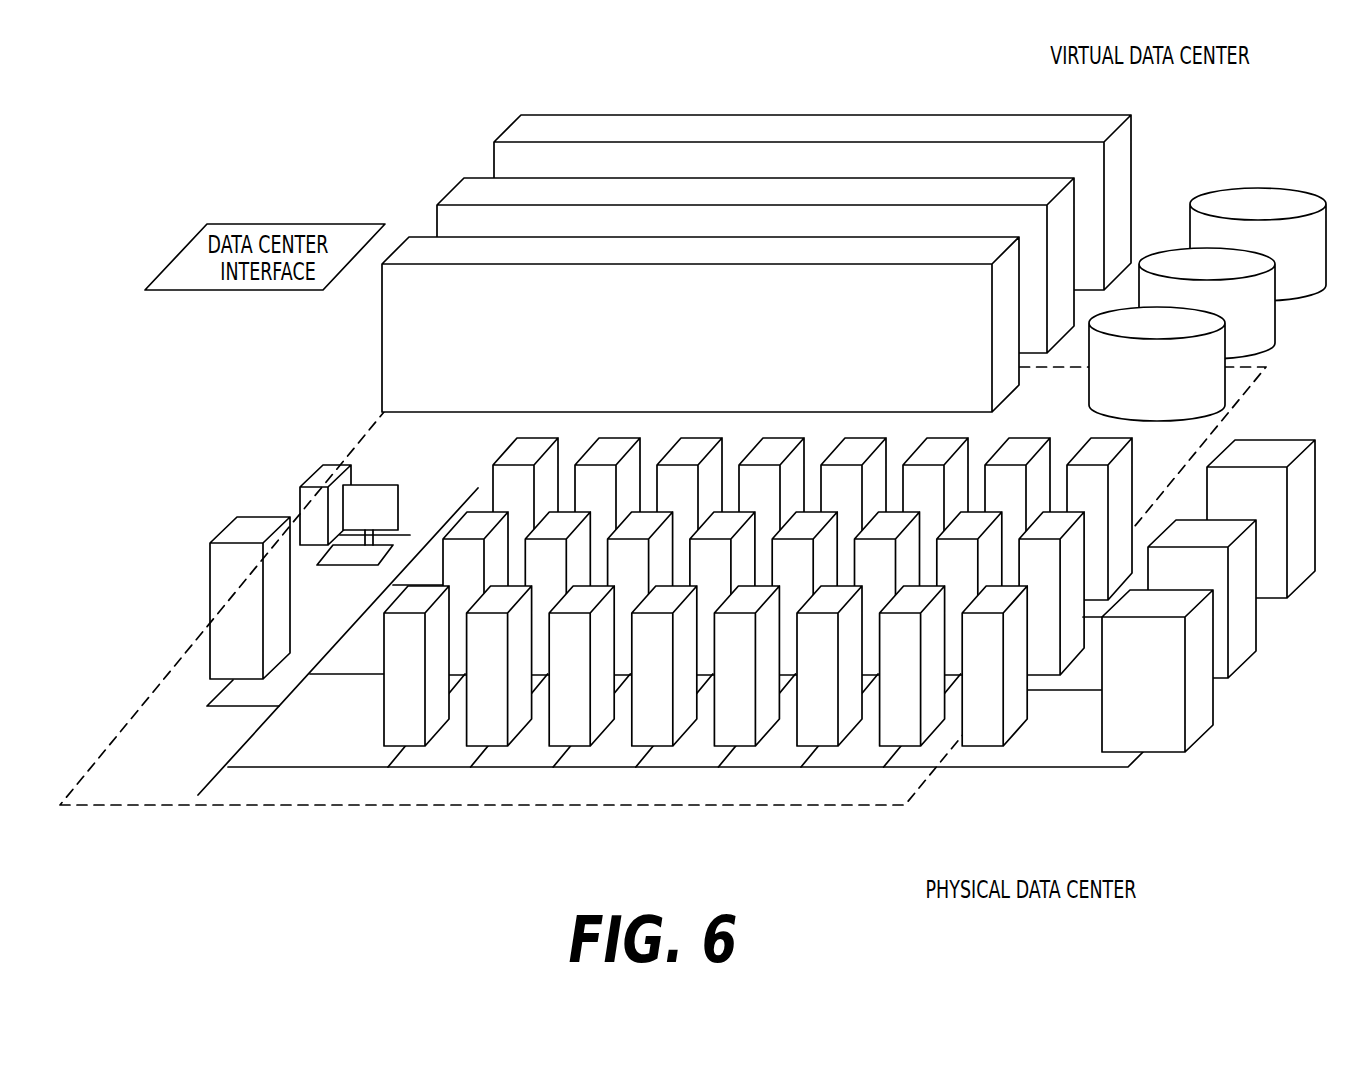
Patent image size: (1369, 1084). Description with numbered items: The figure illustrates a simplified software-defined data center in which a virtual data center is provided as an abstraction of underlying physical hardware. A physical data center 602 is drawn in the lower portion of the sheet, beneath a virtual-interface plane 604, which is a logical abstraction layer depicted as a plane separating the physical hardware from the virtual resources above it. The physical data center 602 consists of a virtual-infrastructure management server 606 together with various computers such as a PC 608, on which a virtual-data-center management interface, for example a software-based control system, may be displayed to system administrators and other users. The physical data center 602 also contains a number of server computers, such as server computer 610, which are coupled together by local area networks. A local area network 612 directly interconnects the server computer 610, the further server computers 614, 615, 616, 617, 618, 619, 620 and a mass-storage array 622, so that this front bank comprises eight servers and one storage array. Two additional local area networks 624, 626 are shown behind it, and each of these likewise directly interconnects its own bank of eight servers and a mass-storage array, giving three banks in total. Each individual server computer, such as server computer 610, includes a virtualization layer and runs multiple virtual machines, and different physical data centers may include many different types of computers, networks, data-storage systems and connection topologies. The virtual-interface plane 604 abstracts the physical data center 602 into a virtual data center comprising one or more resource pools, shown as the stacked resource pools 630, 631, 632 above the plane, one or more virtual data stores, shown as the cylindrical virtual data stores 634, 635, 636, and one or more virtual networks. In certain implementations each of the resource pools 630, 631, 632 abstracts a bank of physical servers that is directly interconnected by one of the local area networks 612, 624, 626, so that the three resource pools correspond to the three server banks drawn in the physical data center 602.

The physical data center 602 is at (1256, 748).
The virtual-interface plane 604 is at (230, 808).
The virtual-infrastructure management server 606 is at (250, 515).
The PC 608 is at (322, 467).
The server computer 610 is at (393, 702).
The local area network 612 is at (304, 768).
The server computer 614 is at (495, 738).
The server computer 615 is at (577, 738).
The server computer 616 is at (660, 738).
The server computer 617 is at (742, 738).
The server computer 618 is at (825, 738).
The server computer 619 is at (907, 738).
The server computer 620 is at (990, 748).
The mass-storage array 622 is at (1165, 737).
The local area network 624 is at (342, 675).
The local area network 626 is at (395, 583).
The resource pool 630 is at (425, 243).
The resource pool 631 is at (480, 182).
The resource pool 632 is at (540, 118).
The virtual data store 634 is at (1218, 392).
The virtual data store 635 is at (1267, 318).
The virtual data store 636 is at (1262, 196).